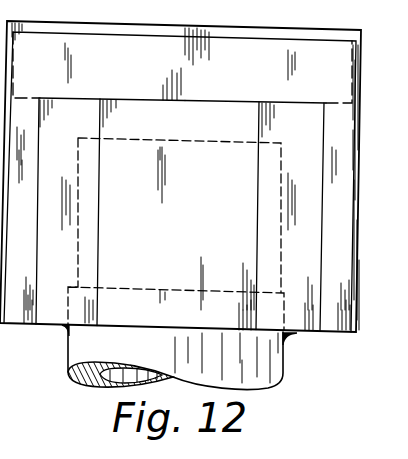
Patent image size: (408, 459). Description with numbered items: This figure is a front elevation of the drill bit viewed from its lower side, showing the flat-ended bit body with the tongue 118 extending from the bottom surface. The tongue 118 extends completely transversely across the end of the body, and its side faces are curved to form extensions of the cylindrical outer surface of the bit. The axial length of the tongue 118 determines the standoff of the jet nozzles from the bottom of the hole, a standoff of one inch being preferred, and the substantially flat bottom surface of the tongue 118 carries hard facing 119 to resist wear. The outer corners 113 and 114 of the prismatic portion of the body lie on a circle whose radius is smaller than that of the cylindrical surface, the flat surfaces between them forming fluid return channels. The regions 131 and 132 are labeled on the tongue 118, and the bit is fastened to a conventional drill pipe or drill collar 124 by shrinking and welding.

The outer corner 113 is at (100, 187).
The outer corner 114 is at (258, 243).
The tongue 118 is at (356, 65).
The hard facing 119 is at (282, 27).
The drill pipe or drill collar 124 is at (283, 359).
The left band section 131 is at (110, 74).
The right band section 132 is at (276, 80).